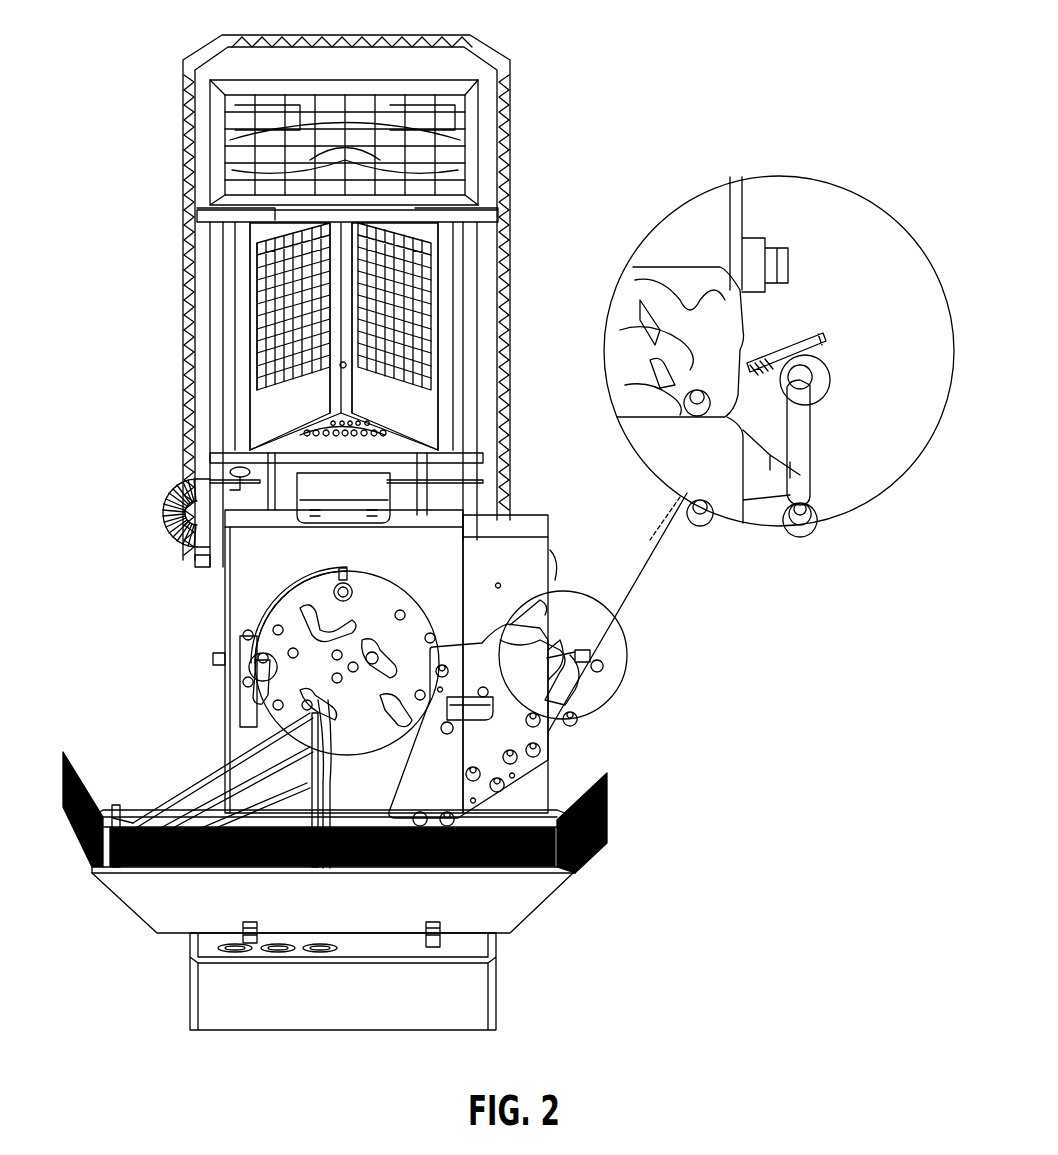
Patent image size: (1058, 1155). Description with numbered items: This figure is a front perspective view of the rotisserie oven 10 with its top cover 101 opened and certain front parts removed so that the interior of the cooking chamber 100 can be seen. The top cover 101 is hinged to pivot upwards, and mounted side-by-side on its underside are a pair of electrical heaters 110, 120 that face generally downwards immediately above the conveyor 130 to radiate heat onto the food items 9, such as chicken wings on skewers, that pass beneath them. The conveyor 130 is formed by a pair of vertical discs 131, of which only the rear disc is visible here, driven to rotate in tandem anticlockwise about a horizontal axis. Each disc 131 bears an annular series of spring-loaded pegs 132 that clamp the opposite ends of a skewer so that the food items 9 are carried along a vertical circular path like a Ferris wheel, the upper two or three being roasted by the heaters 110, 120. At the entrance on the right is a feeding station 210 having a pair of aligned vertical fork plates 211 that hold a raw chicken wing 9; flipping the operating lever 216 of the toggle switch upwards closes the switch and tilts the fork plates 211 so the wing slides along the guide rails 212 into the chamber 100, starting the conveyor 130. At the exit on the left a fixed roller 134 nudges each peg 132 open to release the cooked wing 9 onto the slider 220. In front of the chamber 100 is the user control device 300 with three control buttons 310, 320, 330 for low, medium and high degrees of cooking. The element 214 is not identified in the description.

The rotisserie oven 10 is at (605, 97).
The top cover 101 is at (465, 75).
The electrical heater 110 is at (395, 290).
The electrical heater 120 is at (280, 270).
The cooking chamber 100 is at (270, 583).
The conveyor 130 is at (425, 600).
The vertical disc 131 is at (417, 595).
The peg 132 is at (245, 605).
The fixed roller 134 is at (255, 652).
The food item 9 is at (360, 600).
The feeding station 210 is at (537, 757).
The fork plate 211 is at (550, 655).
The guide rail 212 is at (605, 330).
The operating lever 216 is at (565, 660).
The tube 214 is at (325, 875).
The slider 220 is at (180, 800).
The user control device 300 is at (180, 975).
The control button 310 is at (235, 955).
The control button 320 is at (278, 955).
The control button 330 is at (320, 955).